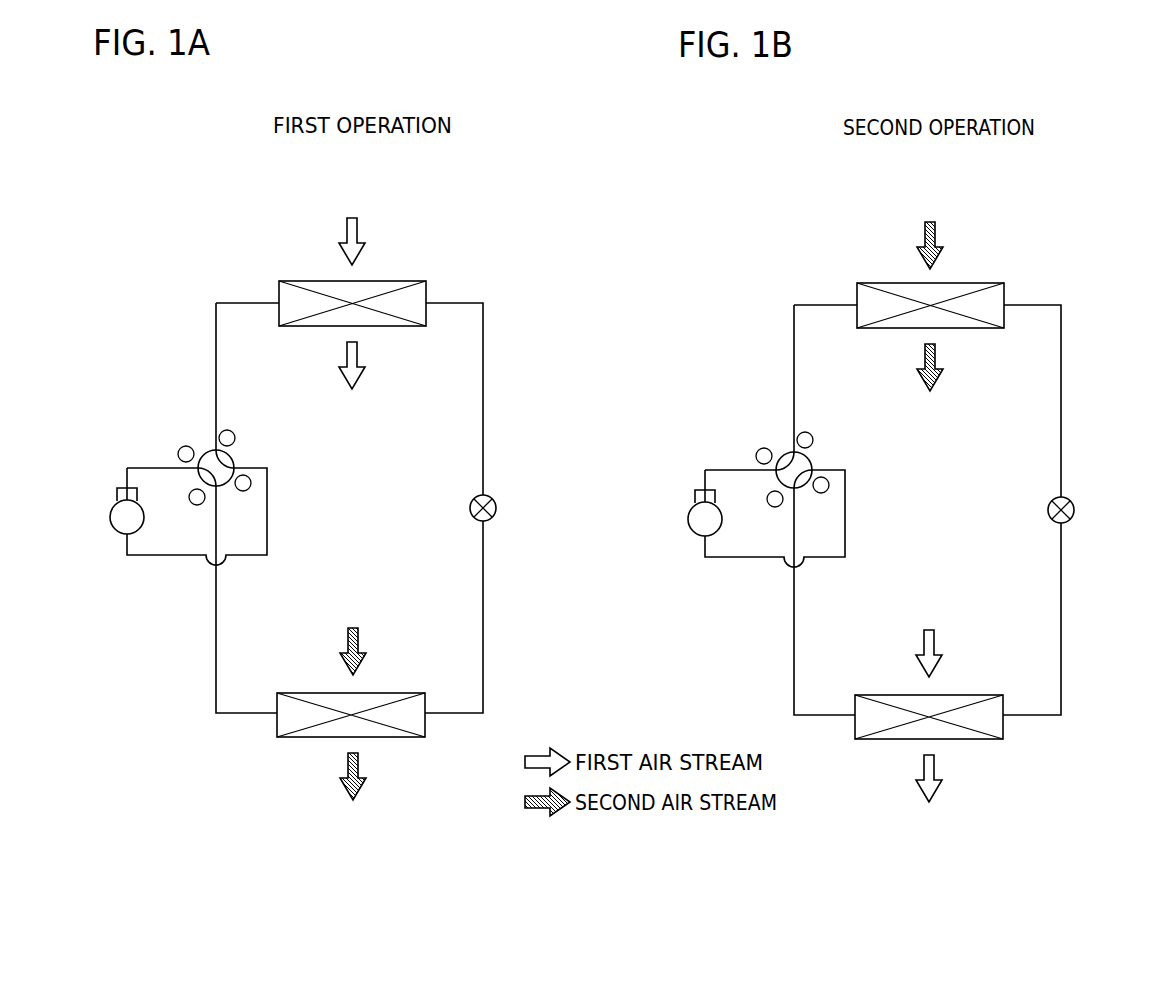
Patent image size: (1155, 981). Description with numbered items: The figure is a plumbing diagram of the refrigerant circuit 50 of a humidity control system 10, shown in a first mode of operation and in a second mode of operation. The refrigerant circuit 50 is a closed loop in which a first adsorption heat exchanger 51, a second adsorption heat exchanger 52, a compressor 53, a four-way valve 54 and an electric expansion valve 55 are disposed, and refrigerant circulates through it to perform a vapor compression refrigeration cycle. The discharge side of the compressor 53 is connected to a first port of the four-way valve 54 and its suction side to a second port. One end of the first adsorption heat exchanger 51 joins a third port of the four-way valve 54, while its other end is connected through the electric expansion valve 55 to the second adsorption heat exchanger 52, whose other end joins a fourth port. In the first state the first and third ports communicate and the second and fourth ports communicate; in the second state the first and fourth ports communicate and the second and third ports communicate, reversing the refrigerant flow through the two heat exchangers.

In FIG. 1A, the humidity control system 10 is at (173, 222).
In FIG. 1B, the humidity control system 10 is at (779, 226).
In FIG. 1A, the refrigerant circuit 50 is at (485, 392).
In FIG. 1B, the refrigerant circuit 50 is at (1063, 394).
In FIG. 1A, the first adsorption heat exchanger 51 is at (405, 737).
In FIG. 1B, the first adsorption heat exchanger 51 is at (983, 739).
In FIG. 1A, the second adsorption heat exchanger 52 is at (407, 281).
In FIG. 1B, the second adsorption heat exchanger 52 is at (983, 283).
In FIG. 1A, the compressor 53 is at (110, 510).
In FIG. 1B, the compressor 53 is at (688, 512).
In FIG. 1A, the four-way valve 54 is at (233, 458).
In FIG. 1B, the four-way valve 54 is at (811, 460).
In FIG. 1A, the electric expansion valve 55 is at (497, 514).
In FIG. 1B, the electric expansion valve 55 is at (1075, 516).